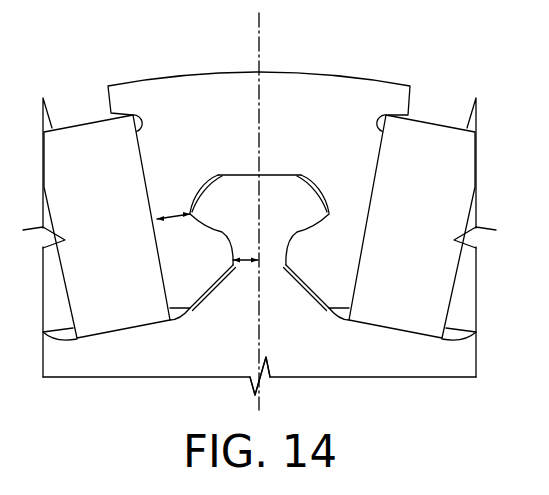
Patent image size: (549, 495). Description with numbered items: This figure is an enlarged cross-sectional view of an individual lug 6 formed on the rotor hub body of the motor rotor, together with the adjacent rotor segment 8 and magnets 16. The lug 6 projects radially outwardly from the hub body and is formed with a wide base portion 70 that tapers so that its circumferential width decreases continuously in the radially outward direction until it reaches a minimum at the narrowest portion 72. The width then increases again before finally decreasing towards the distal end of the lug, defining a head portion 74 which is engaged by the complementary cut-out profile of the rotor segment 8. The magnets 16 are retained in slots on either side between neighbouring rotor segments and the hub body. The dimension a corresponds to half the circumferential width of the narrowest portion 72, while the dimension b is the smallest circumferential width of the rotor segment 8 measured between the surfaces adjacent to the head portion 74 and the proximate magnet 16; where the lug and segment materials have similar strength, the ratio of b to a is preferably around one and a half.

The lug 6 is at (278, 182).
The rotor segment 8 is at (330, 103).
The magnet 16 is at (420, 132).
The base portion 70 is at (247, 297).
The narrowest portion 72 is at (277, 260).
The head portion 74 is at (207, 222).
The dimension a is at (243, 255).
The dimension b is at (170, 211).